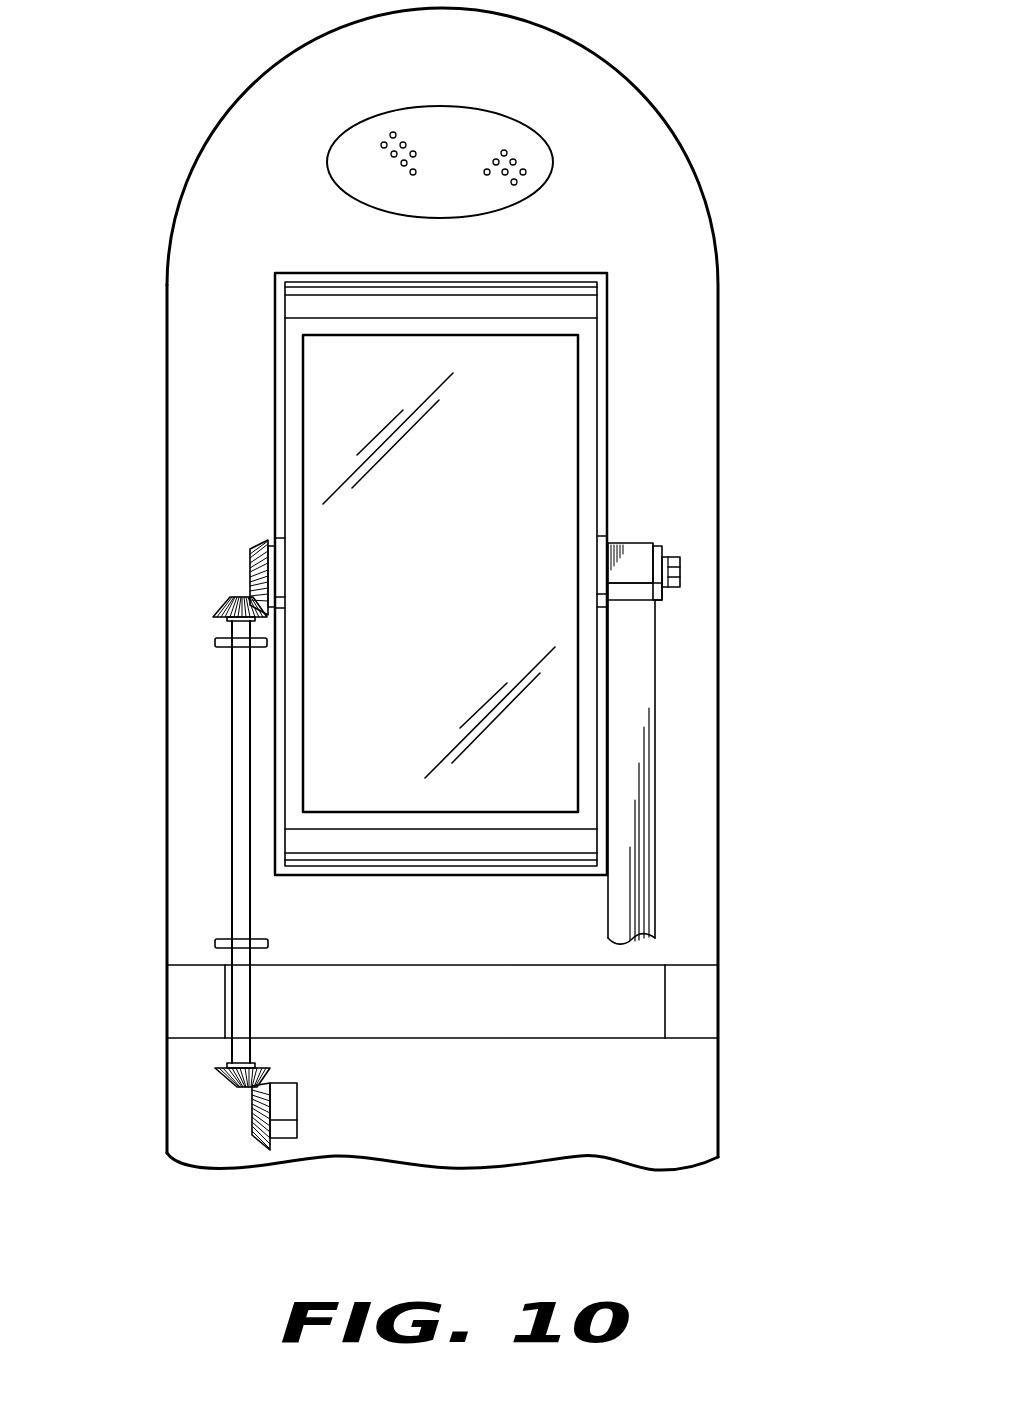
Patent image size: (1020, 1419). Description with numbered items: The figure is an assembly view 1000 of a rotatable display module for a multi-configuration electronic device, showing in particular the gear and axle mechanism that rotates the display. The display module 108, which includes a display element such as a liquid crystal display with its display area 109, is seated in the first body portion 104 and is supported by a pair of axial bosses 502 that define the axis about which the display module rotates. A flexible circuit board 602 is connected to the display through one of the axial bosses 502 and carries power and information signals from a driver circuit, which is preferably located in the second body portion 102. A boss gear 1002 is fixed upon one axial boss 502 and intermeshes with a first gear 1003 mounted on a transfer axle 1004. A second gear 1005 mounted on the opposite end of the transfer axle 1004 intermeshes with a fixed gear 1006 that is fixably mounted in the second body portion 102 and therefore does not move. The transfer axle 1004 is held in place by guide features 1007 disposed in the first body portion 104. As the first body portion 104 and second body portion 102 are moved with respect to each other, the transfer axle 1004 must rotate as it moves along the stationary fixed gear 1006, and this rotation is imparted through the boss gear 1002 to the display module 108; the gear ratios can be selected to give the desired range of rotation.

The assembly view 1000 is at (239, 1323).
The second body portion 102 is at (718, 1100).
The first body portion 104 is at (718, 694).
The rotating display module 108 is at (607, 428).
The display screen 109 is at (485, 592).
The axial boss 502 is at (275, 577).
The flexible circuit board 602 is at (607, 920).
The boss gear 1002 is at (254, 548).
The first gear 1003 is at (221, 603).
The transfer axle 1004 is at (232, 760).
The second gear 1005 is at (228, 1078).
The fixed gear 1006 is at (262, 1150).
The guide features 1007 is at (215, 643).